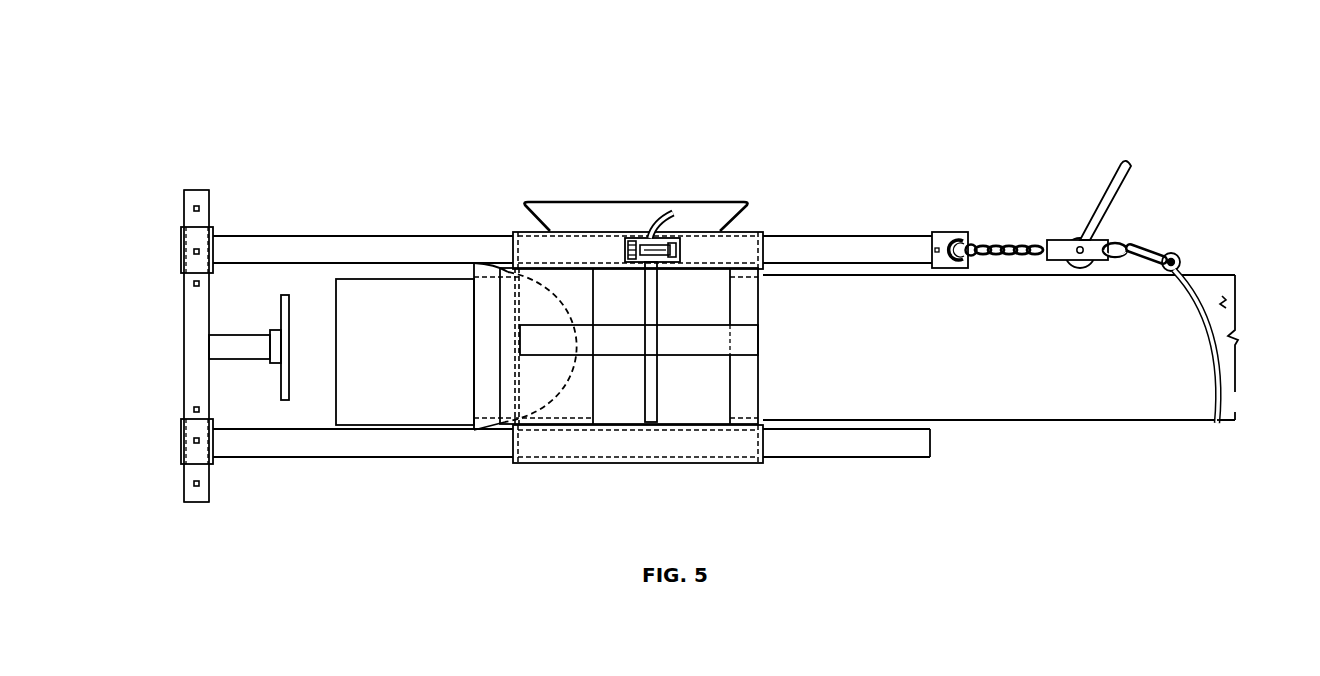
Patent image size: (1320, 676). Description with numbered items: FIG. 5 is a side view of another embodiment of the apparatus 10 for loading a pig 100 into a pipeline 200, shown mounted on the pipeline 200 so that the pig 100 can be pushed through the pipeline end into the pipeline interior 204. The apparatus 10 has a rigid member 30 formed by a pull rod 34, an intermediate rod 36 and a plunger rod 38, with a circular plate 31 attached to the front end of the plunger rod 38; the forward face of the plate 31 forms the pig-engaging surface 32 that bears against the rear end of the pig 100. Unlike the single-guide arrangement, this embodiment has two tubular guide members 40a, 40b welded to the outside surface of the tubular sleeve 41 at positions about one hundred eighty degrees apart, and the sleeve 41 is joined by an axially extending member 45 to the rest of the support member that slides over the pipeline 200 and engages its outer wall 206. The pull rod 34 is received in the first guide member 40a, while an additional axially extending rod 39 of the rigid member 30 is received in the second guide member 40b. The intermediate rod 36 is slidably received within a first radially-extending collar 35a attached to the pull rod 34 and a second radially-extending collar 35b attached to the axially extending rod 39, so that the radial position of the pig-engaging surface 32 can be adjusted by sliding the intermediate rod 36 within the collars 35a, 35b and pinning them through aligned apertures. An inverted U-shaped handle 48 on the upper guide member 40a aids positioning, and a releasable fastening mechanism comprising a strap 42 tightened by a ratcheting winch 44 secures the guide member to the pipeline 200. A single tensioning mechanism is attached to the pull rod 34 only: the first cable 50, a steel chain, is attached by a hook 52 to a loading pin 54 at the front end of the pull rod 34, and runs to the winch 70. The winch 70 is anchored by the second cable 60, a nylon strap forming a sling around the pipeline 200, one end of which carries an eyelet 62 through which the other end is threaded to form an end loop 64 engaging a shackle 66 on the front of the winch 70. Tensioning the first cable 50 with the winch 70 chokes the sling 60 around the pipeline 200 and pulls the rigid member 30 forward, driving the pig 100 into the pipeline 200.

The apparatus 10 is at (316, 80).
The rigid member 30 is at (205, 183).
The circular plate 31 is at (281, 372).
The pig-engaging surface 32 is at (289, 372).
The pull rod 34 is at (360, 235).
The first radially-extending collar 35a is at (181, 243).
The second radially-extending collar 35b is at (181, 443).
The intermediate rod 36 is at (183, 330).
The plunger rod 38 is at (222, 336).
The axially extending rod 39 is at (388, 460).
The first guide member 40a is at (762, 232).
The second guide member 40b is at (757, 465).
The tubular sleeve 41 is at (598, 387).
The strap 42 is at (659, 389).
The ratcheting winch 44 is at (680, 249).
The axially extending member 45 is at (691, 323).
The handle 48 is at (641, 201).
The first cable 50 is at (1013, 245).
The hook 52 is at (972, 246).
The loading pin 54 is at (958, 240).
The second cable 60 is at (1200, 326).
The eyelet 62 is at (1182, 256).
The end loop 64 is at (1152, 250).
The shackle 66 is at (1118, 242).
The winch 70 is at (1087, 236).
The pig 100 is at (336, 285).
The pipeline 200 is at (1229, 425).
The pipeline interior 204 is at (1236, 302).
The outer wall 206 is at (1000, 347).